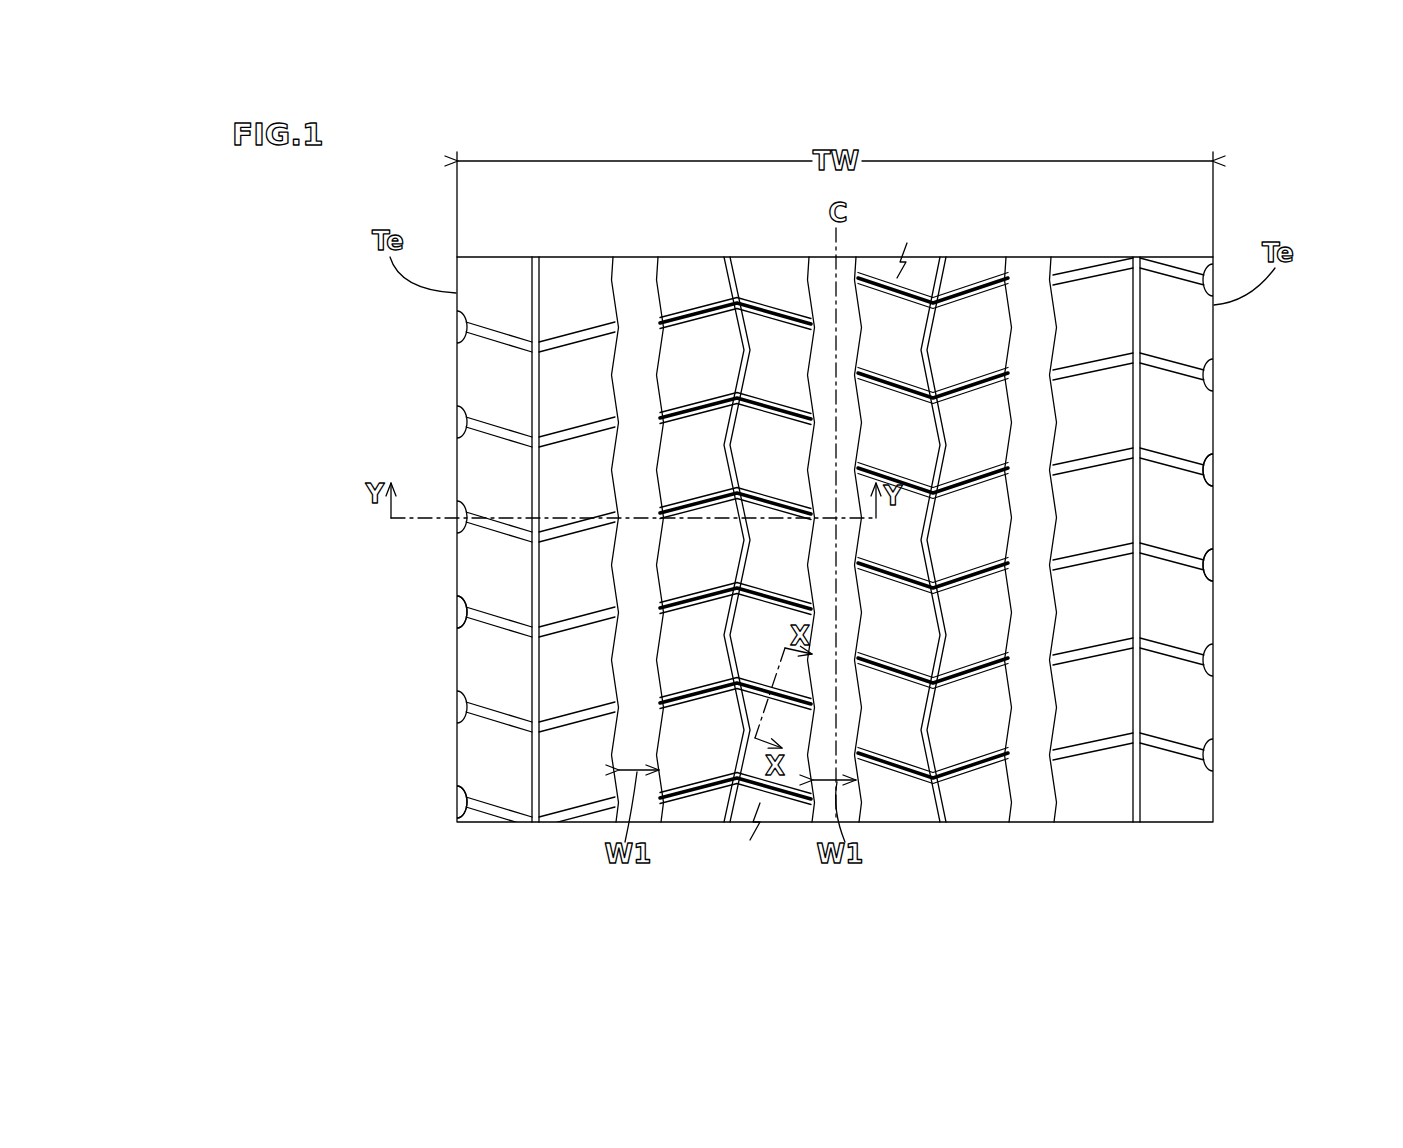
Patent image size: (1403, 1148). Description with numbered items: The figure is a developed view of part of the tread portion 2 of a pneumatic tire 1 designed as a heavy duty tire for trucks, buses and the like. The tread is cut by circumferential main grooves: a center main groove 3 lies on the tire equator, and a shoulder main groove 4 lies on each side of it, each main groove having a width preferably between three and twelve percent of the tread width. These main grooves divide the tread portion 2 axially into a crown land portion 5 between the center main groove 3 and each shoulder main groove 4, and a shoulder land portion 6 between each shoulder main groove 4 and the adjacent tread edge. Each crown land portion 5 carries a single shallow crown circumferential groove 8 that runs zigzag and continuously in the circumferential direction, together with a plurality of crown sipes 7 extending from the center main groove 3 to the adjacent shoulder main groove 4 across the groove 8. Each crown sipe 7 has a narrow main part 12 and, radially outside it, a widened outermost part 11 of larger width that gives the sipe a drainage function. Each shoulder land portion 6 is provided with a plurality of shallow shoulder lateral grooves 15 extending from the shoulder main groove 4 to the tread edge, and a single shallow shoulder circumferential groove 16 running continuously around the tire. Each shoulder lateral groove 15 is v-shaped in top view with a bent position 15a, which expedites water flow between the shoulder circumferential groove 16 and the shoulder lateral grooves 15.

The pneumatic tire 1 is at (1292, 199).
The tread portion 2 is at (1231, 241).
The center main groove 3 is at (827, 287).
The shoulder main groove 4 is at (637, 282).
The crown land portion 5 is at (764, 281).
The shoulder land portion 6 is at (837, 508).
The crown sipe 7 is at (834, 596).
The crown circumferential groove 8 is at (837, 550).
The widened outermost part 11 is at (705, 792).
The main part 12 is at (680, 803).
The shoulder lateral groove 15 is at (837, 545).
The bent position 15a is at (524, 733).
The shoulder circumferential groove 16 is at (532, 674).